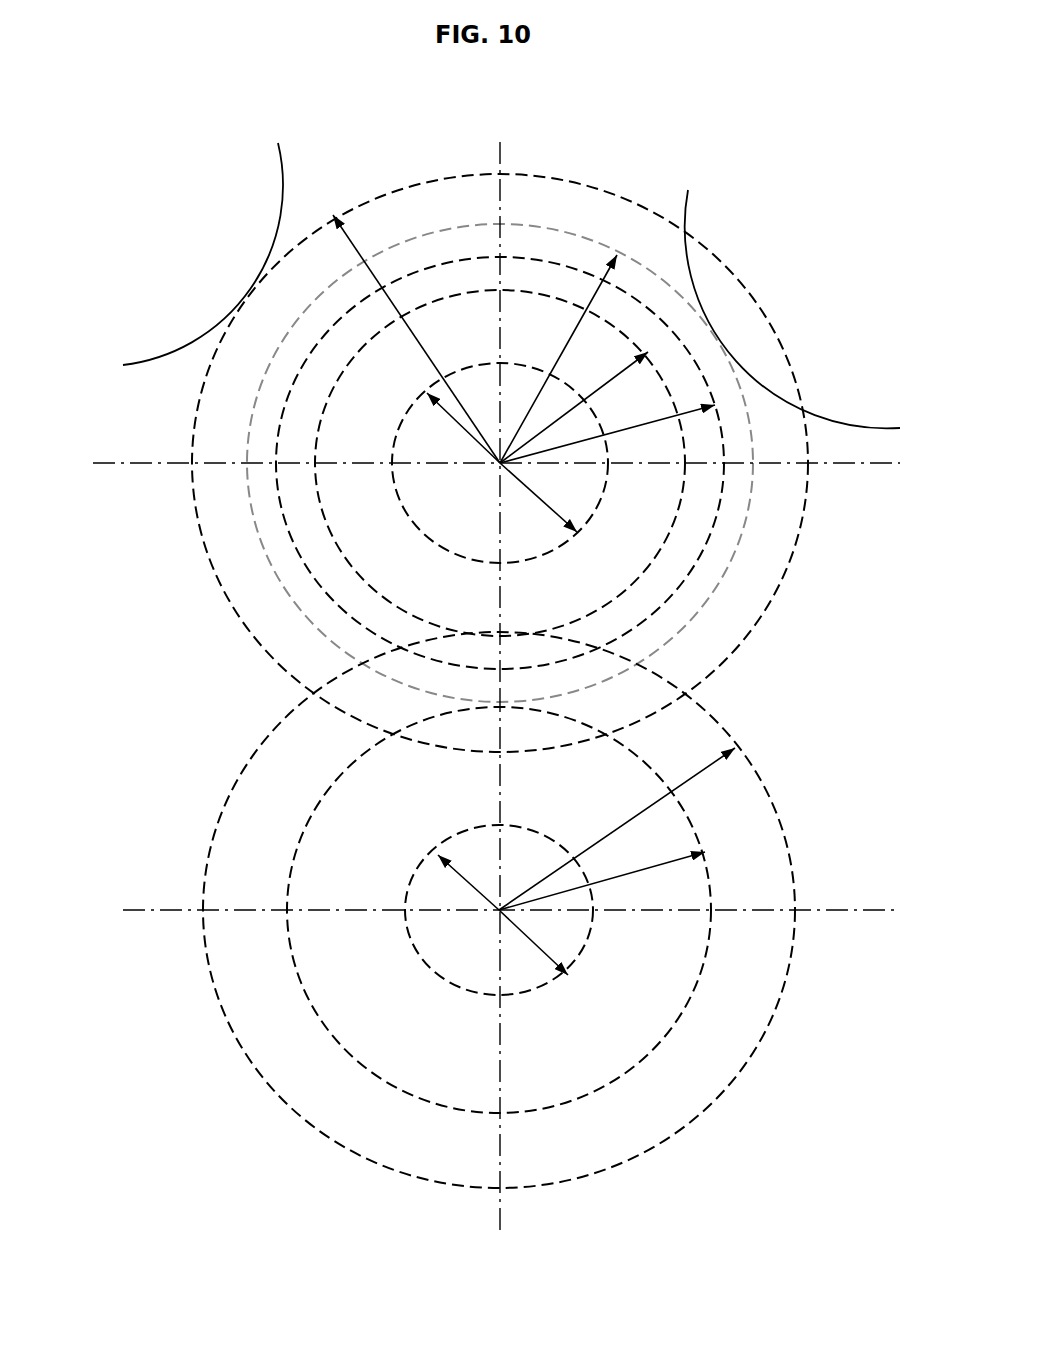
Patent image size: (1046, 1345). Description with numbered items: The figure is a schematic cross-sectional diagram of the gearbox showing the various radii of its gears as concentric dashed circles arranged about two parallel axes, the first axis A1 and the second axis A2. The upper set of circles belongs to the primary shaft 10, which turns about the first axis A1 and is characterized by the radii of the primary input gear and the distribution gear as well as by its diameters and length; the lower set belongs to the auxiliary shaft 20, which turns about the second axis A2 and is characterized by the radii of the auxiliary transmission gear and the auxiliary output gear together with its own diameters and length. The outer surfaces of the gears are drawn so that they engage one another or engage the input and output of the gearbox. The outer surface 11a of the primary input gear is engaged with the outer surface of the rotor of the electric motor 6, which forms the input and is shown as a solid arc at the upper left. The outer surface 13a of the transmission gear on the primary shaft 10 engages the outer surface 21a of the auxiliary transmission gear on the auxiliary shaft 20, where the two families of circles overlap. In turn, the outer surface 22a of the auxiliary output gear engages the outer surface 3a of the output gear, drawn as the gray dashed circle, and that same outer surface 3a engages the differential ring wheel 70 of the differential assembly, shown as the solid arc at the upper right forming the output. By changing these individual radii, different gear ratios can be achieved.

The electric motor 6 is at (145, 222).
The differential ring wheel 70 is at (867, 268).
The primary shaft 10 is at (443, 449).
The outer surface of the primary input gear 11a is at (203, 537).
The outer surface of the output gear 3a is at (569, 232).
The outer surface of the transmission gear 13a is at (672, 540).
The first axis A1 is at (500, 463).
The auxiliary shaft 20 is at (449, 910).
The outer surface of the auxiliary transmission gear 21a is at (775, 808).
The outer surface of the auxiliary output gear 22a is at (682, 1021).
The second axis A2 is at (499, 910).